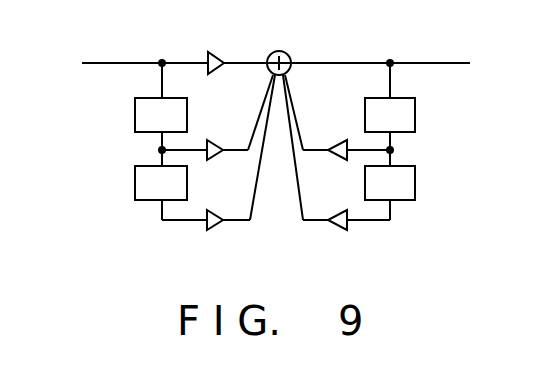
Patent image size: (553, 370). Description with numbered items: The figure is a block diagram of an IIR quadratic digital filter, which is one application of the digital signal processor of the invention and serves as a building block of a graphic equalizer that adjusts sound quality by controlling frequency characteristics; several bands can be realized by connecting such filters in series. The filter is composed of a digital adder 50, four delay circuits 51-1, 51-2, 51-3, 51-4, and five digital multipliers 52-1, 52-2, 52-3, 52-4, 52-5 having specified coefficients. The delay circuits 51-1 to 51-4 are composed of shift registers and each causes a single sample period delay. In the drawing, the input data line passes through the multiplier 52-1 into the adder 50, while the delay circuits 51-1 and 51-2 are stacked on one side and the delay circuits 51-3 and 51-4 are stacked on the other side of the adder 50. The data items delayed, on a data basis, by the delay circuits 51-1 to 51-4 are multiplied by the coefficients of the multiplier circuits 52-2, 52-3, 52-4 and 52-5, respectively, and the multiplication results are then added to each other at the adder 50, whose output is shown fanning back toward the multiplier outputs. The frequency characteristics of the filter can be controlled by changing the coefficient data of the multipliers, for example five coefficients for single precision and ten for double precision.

The digital adder 50 is at (287, 53).
The delay circuit 51-1 is at (135, 117).
The delay circuit 51-2 is at (135, 185).
The delay circuit 51-3 is at (415, 117).
The delay circuit 51-4 is at (415, 185).
The digital multiplier 52-1 is at (217, 37).
The digital multiplier 52-2 is at (215, 140).
The digital multiplier 52-3 is at (222, 196).
The digital multiplier 52-4 is at (338, 140).
The digital multiplier 52-5 is at (338, 210).